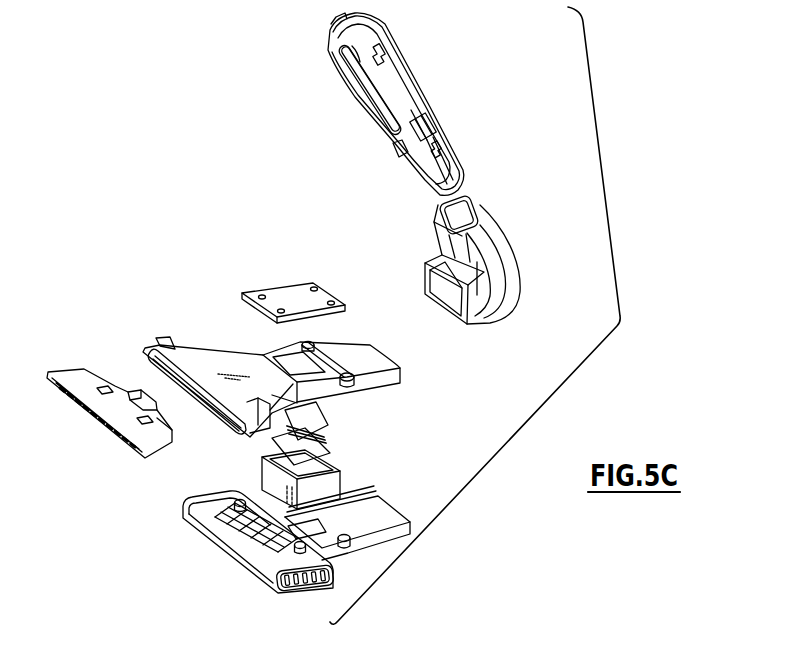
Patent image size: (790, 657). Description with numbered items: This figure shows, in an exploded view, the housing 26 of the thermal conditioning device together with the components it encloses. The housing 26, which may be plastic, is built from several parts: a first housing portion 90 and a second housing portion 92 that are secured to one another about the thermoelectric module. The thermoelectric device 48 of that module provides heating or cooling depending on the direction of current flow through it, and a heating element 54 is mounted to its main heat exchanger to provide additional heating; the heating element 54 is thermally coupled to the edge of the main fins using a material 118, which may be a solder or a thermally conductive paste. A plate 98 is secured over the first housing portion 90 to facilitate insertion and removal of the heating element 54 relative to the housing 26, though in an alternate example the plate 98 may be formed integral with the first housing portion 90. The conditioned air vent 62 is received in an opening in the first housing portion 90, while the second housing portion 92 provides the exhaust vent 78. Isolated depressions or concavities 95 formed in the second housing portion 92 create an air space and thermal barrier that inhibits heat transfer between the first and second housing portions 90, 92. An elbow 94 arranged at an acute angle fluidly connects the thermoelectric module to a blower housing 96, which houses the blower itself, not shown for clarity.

The housing 26 is at (566, 381).
The thermoelectric device 48 is at (334, 487).
The heating element 54 is at (310, 420).
The conditioned air vent 62 is at (115, 412).
The exhaust vent 78 is at (293, 589).
The first housing portion 90 is at (227, 357).
The second housing portion 92 is at (372, 514).
The elbow 94 is at (497, 266).
The depressions or concavities 95 is at (228, 530).
The blower housing 96 is at (421, 107).
The plate 98 is at (287, 294).
The material 118 is at (308, 447).